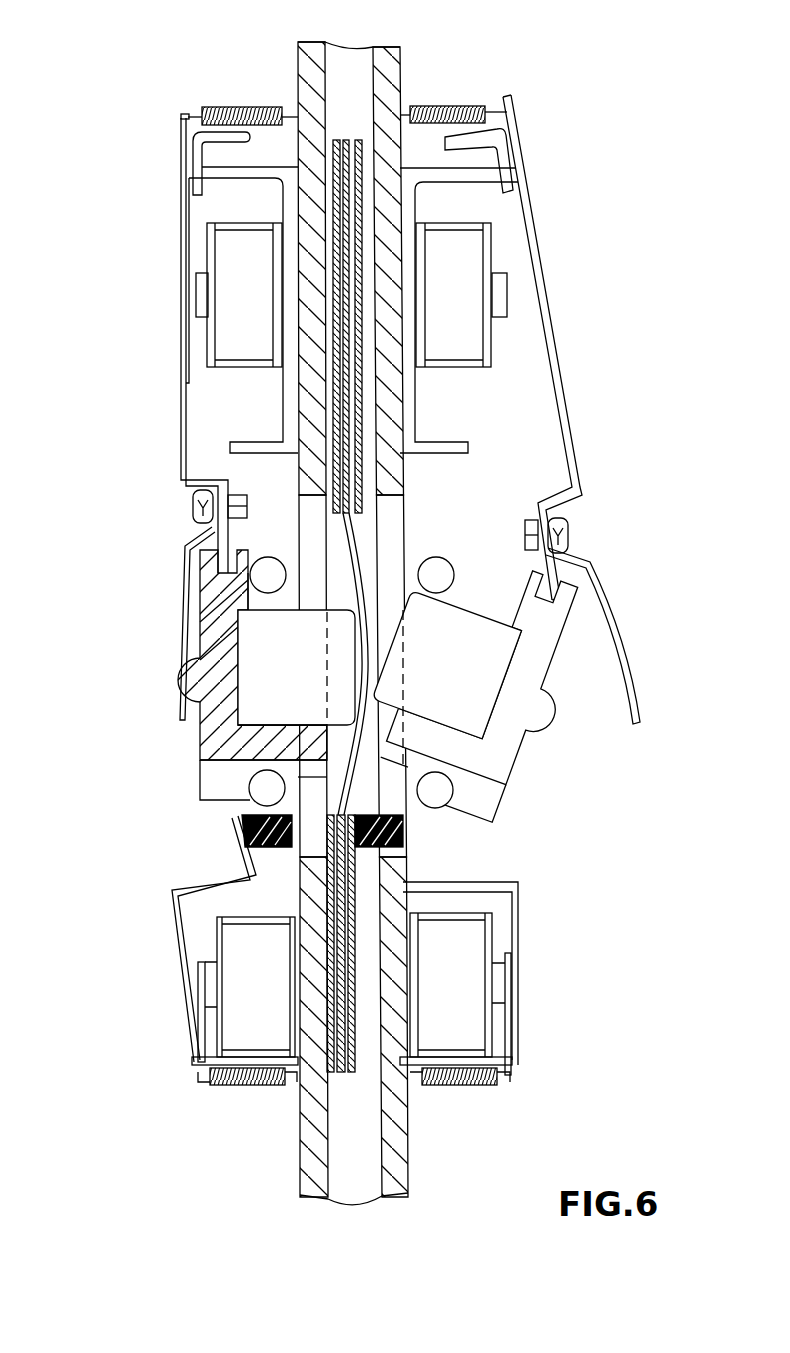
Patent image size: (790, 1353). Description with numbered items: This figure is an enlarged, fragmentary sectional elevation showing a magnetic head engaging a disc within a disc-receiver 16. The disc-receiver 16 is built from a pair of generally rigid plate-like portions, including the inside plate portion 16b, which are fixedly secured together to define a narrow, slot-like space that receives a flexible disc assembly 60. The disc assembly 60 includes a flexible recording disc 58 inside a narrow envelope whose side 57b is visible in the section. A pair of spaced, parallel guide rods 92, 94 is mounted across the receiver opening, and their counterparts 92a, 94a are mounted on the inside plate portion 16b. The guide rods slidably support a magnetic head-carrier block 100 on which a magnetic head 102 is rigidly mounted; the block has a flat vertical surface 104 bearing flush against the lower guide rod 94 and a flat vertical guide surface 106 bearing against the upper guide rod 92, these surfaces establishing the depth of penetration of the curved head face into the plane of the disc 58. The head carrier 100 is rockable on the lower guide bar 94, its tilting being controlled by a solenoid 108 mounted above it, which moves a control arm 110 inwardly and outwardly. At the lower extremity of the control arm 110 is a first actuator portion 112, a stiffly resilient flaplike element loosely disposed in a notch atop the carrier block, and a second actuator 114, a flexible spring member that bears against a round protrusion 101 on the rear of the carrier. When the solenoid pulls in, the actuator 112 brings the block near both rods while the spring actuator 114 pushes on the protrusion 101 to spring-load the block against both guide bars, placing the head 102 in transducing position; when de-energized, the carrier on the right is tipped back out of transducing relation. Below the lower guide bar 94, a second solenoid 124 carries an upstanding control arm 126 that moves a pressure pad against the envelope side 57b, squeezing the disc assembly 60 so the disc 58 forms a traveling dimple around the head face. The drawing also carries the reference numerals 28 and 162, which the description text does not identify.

The disc-receiver 16 is at (395, 72).
The inside plate portion 16b is at (398, 1187).
The tube wall 162 is at (310, 1163).
The flexible disc assembly 60 is at (350, 138).
The envelope side 57b is at (358, 140).
The flexible recording disc 58 is at (358, 535).
The solenoid 108 is at (155, 266).
The control arm 110 is at (181, 411).
The first actuator portion 112 is at (233, 535).
The second actuator 114 is at (178, 607).
The round protrusion 101 is at (192, 660).
The magnetic head-carrier block 100 is at (194, 747).
The magnetic head 102 is at (305, 669).
The flat vertical guide surface 106 is at (250, 590).
The flat vertical surface 104 is at (272, 738).
The upper guide rod 92 is at (270, 567).
The counterpart upper guide rod 92a is at (440, 568).
The lower guide rod 94 is at (262, 802).
The counterpart lower guide rod 94a is at (437, 800).
The brake pad 28 is at (242, 837).
The control arm 126 is at (180, 908).
The second solenoid 124 is at (235, 1020).